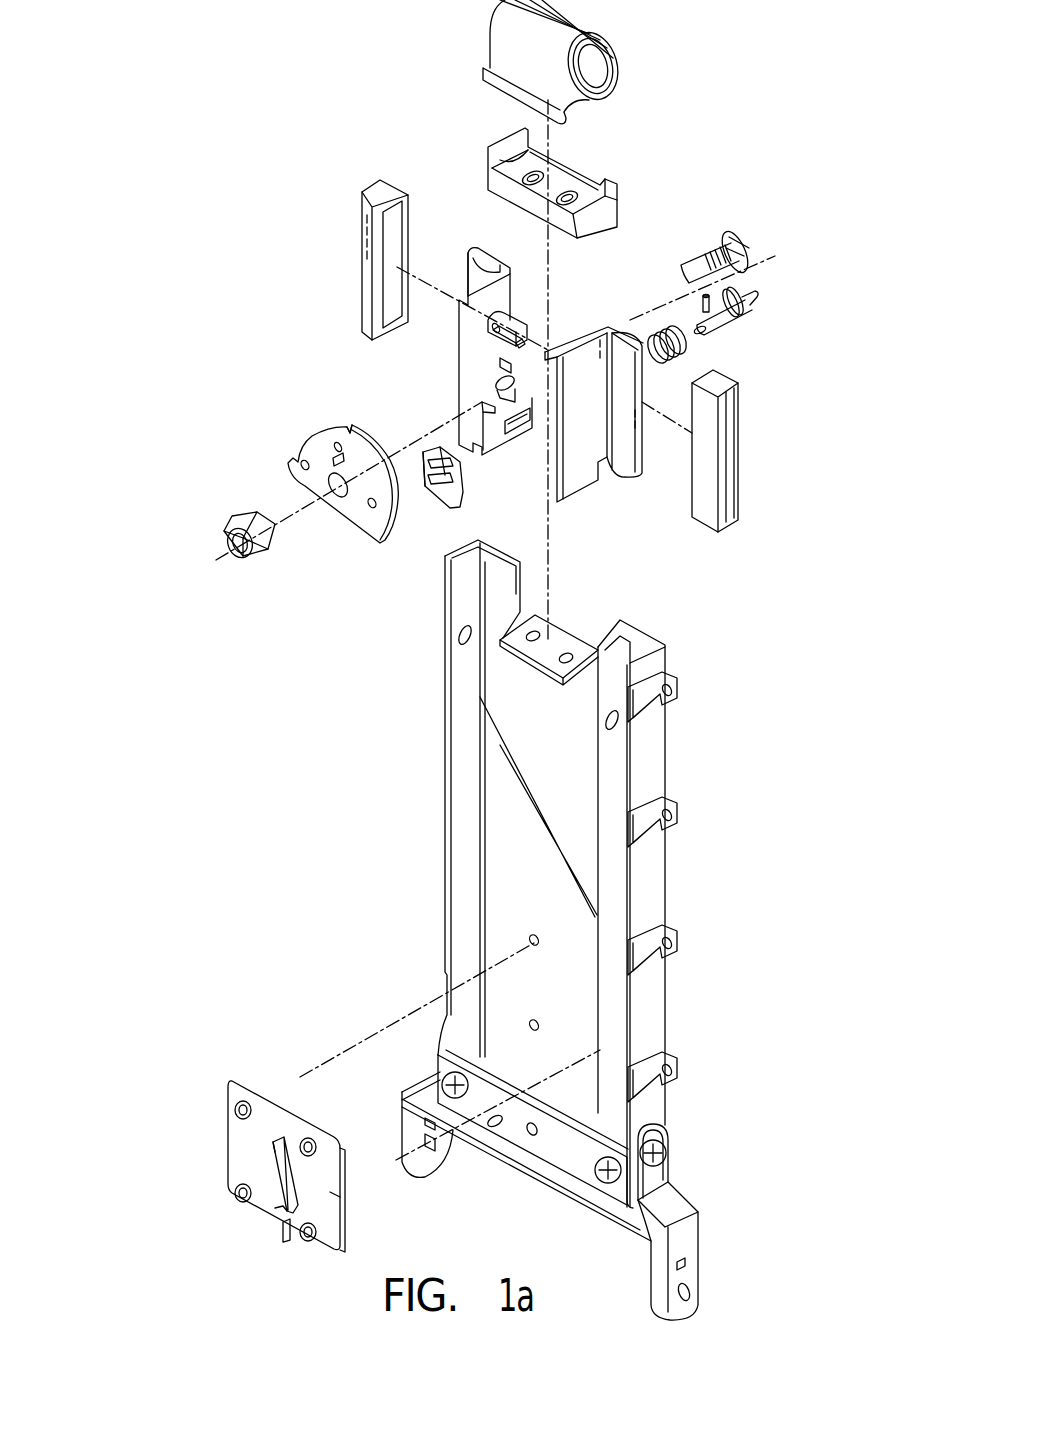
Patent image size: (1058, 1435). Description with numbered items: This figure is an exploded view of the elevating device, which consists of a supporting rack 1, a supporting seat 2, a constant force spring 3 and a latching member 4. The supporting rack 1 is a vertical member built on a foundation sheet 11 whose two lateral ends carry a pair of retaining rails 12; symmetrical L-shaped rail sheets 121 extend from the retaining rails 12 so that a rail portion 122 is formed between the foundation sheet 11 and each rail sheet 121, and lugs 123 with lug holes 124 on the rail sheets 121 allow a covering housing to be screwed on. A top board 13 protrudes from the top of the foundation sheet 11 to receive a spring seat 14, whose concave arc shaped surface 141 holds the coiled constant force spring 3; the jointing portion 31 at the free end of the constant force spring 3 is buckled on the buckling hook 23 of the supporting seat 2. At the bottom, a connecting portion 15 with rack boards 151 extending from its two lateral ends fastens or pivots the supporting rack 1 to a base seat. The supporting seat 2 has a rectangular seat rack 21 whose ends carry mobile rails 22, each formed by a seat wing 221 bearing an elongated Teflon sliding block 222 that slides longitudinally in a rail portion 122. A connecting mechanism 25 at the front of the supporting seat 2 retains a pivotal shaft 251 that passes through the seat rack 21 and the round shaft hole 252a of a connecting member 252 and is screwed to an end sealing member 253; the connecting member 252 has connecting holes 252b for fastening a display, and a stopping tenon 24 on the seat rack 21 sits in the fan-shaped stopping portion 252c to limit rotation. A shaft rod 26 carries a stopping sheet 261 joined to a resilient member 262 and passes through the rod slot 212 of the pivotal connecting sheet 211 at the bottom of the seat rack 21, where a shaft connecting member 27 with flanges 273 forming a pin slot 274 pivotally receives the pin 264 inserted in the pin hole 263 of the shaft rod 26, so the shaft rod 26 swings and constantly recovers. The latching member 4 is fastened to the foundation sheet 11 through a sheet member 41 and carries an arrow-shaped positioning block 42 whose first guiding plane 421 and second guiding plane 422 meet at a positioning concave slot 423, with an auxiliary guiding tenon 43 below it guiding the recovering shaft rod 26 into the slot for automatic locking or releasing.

The supporting rack 1 is at (564, 930).
The foundation sheet 11 is at (615, 785).
The retaining rails 12 is at (458, 772).
The rail sheets 121 is at (617, 882).
The rail portion 122 is at (634, 640).
The lugs 123 is at (667, 957).
The lug hole 124 is at (668, 1082).
The top board 13 is at (553, 643).
The spring seat 14 is at (594, 183).
The concave arc shaped surface 141 is at (558, 180).
The connecting portion 15 is at (522, 1177).
The rack boards 151 is at (660, 1270).
The supporting seat 2 is at (577, 482).
The seat rack 21 is at (423, 366).
The pivotal connecting sheet 211 is at (482, 403).
The rod slot 212 is at (524, 437).
The mobile rails 22 is at (682, 532).
The seat wings 221 is at (478, 268).
The sliding block 222 is at (370, 215).
The buckling hook 23 is at (498, 314).
The stopping tenon 24 is at (497, 337).
The connecting mechanism 25 is at (250, 463).
The pivotal shaft 251 is at (744, 275).
The connecting member 252 is at (289, 506).
The round shaft hole 252a is at (337, 497).
The connecting holes 252b is at (372, 508).
The stopping portion 252c is at (320, 428).
The end sealing member 253 is at (263, 557).
The shaft rod 26 is at (711, 317).
The stopping sheet 261 is at (737, 315).
The resilient member 262 is at (657, 335).
The pin hole 263 is at (722, 325).
The pin 264 is at (703, 305).
The shaft connecting member 27 is at (418, 471).
The flanges 273 is at (443, 487).
The pin slot 274 is at (444, 463).
The constant force spring 3 is at (567, 25).
The jointing portion 31 is at (510, 90).
The latching member 4 is at (274, 1154).
The sheet member 41 is at (275, 1125).
The arrow-shaped positioning block 42 is at (272, 1182).
The first guiding plane 421 is at (342, 1195).
The second guiding plane 422 is at (268, 1156).
The positioning concave slot 423 is at (282, 1210).
The auxiliary guiding tenon 43 is at (288, 1235).